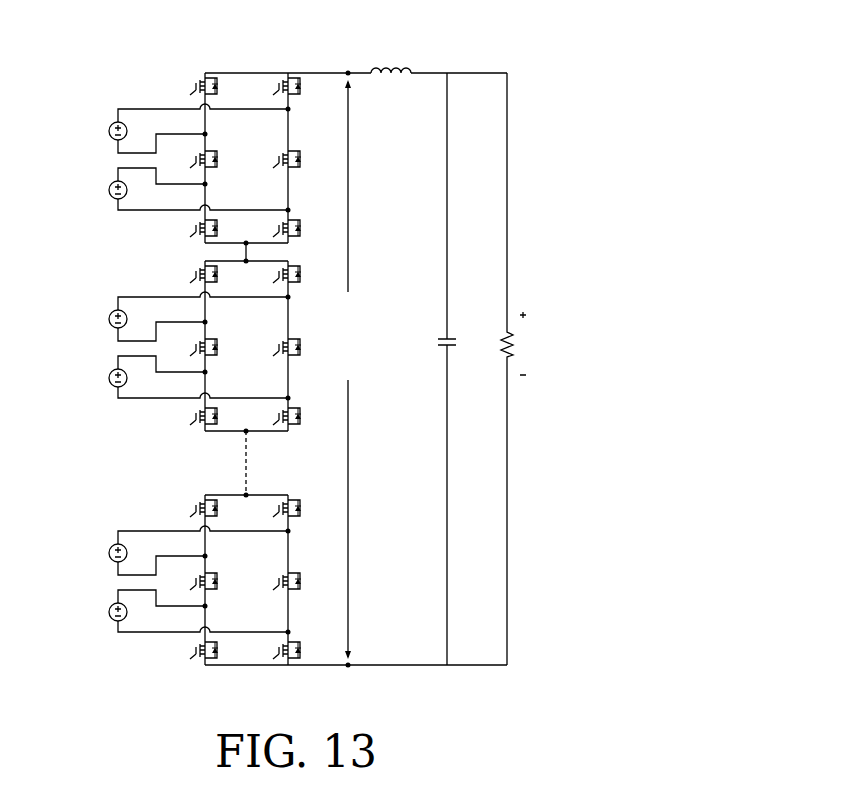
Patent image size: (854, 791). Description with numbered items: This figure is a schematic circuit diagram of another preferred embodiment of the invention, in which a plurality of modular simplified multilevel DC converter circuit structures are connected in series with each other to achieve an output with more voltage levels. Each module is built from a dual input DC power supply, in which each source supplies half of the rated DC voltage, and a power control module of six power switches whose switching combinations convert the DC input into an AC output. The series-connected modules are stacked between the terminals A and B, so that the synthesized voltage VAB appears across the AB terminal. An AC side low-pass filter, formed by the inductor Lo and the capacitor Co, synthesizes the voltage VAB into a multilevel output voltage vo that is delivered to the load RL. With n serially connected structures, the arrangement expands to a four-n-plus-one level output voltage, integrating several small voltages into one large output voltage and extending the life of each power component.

The output inductor Lo is at (391, 60).
The output capacitor Co is at (435, 369).
The load resistor RL is at (495, 369).
The voltage at the AB terminal VAB is at (345, 314).
The output voltage vo is at (523, 343).
The A terminal A is at (348, 65).
The B terminal B is at (349, 676).